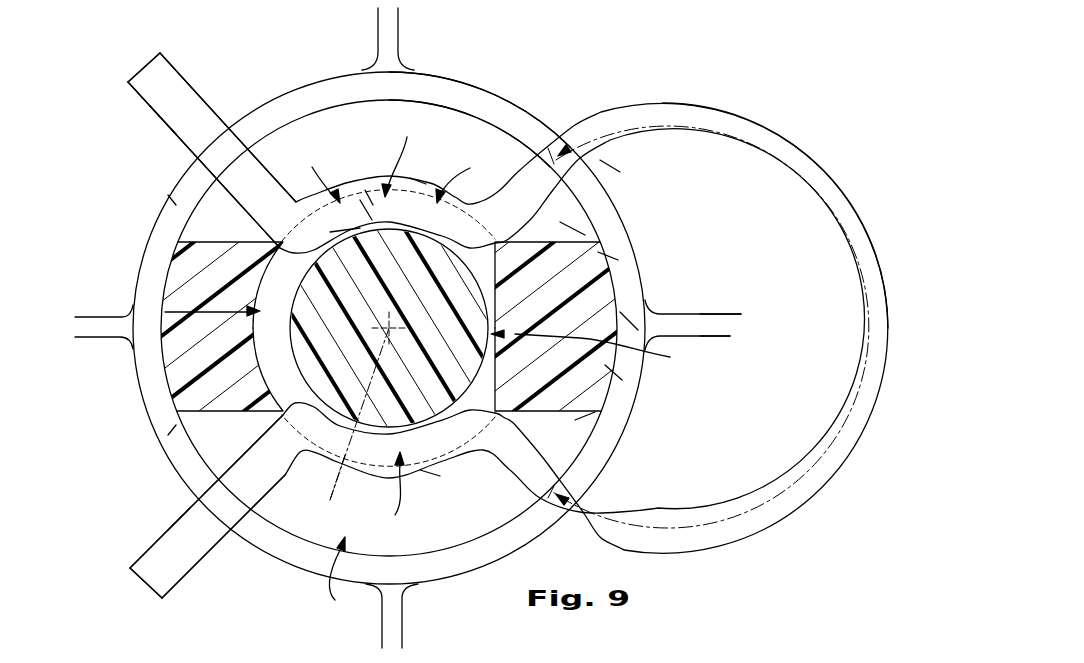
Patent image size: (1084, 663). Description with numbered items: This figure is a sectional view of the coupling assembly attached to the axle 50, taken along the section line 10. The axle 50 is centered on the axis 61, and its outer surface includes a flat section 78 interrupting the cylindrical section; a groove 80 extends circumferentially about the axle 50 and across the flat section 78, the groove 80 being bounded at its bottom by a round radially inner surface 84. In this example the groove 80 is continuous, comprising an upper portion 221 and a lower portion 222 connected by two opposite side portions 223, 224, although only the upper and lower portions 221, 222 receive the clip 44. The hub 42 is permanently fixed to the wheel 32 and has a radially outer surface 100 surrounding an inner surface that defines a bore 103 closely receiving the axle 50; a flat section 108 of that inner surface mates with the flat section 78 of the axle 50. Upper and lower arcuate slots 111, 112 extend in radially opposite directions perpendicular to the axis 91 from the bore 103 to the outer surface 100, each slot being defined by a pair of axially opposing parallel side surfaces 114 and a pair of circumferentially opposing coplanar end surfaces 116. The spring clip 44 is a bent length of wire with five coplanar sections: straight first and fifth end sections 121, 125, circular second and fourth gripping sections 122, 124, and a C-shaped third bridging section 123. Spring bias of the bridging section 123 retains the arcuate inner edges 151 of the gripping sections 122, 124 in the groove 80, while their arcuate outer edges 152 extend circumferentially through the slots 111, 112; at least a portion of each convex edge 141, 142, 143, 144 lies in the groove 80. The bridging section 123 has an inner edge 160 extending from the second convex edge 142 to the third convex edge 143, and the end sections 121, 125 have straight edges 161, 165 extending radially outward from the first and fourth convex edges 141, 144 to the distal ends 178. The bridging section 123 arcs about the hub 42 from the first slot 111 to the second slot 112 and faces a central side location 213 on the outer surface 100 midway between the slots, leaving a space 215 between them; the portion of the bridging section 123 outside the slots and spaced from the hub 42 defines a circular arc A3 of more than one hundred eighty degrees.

The section line 10 is at (388, 34).
The wheel 32 is at (544, 104).
The hub 42 is at (145, 382).
The clip 44 is at (808, 133).
The axle 50 is at (280, 347).
The axis 61 is at (327, 460).
The flat section 78 is at (629, 320).
The groove 80 is at (314, 175).
The radially inner surface 84 is at (347, 233).
The axis 91 is at (325, 484).
The radially outer surface 100 is at (614, 372).
The bore 103 is at (470, 177).
The flat section 108 is at (608, 256).
The upper arcuate slot 111 is at (462, 108).
The lower arcuate slot 112 is at (351, 578).
The side surfaces 114 is at (305, 128).
The end surfaces 116 is at (163, 200).
The first section 121 is at (183, 97).
The second section 122 is at (418, 176).
The third section 123 is at (848, 202).
The fourth section 124 is at (430, 473).
The fifth section 125 is at (158, 542).
The first convex edge 141 is at (280, 240).
The second convex edge 142 is at (515, 242).
The third convex edge 143 is at (520, 412).
The fourth convex edge 144 is at (268, 412).
The arcuate inner edges 151 is at (373, 205).
The arcuate outer edges 152 is at (372, 220).
The inner edge 160 is at (612, 165).
The straight edge 161 is at (163, 120).
The straight edge 165 is at (178, 517).
The distal ends 178 is at (148, 62).
The central side location 213 is at (660, 312).
The space 215 is at (799, 379).
The upper portion 221 is at (406, 156).
The lower portion 222 is at (378, 493).
The side portion 223 is at (133, 308).
The side portion 224 is at (600, 349).
The circular arc A3 is at (643, 527).